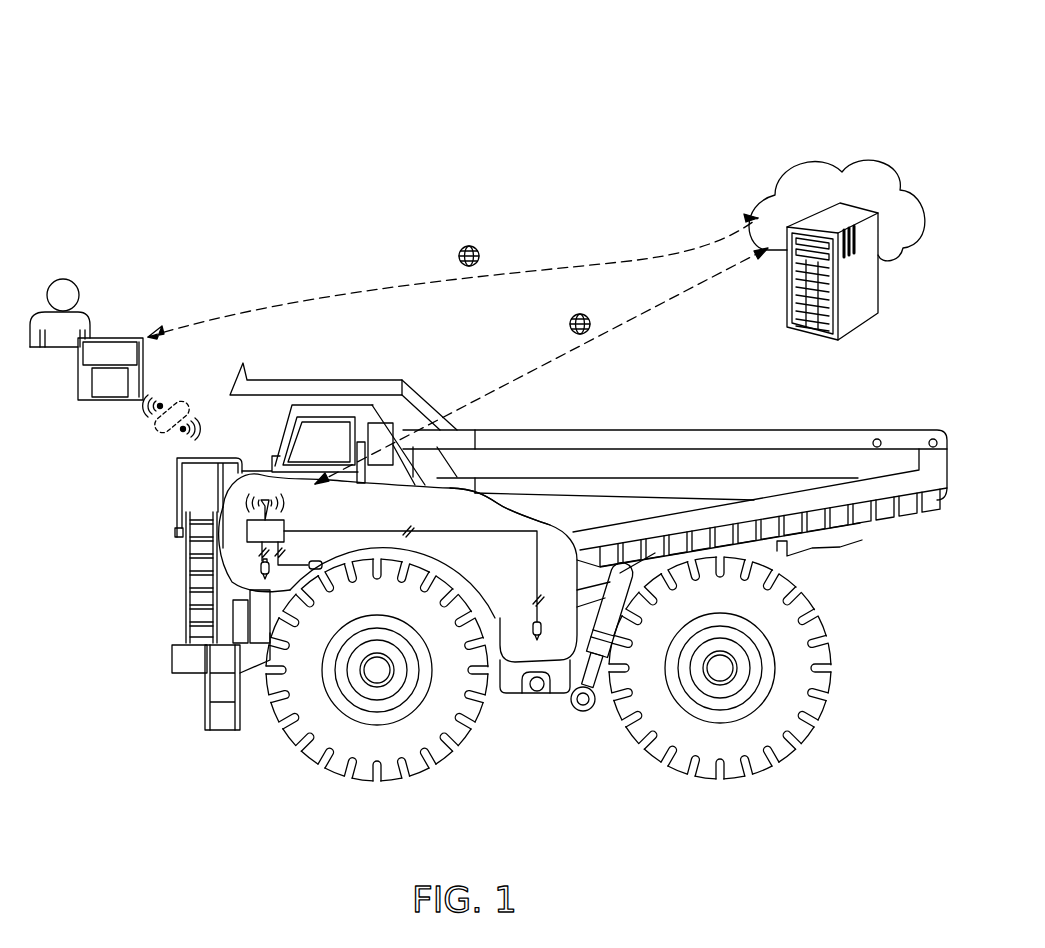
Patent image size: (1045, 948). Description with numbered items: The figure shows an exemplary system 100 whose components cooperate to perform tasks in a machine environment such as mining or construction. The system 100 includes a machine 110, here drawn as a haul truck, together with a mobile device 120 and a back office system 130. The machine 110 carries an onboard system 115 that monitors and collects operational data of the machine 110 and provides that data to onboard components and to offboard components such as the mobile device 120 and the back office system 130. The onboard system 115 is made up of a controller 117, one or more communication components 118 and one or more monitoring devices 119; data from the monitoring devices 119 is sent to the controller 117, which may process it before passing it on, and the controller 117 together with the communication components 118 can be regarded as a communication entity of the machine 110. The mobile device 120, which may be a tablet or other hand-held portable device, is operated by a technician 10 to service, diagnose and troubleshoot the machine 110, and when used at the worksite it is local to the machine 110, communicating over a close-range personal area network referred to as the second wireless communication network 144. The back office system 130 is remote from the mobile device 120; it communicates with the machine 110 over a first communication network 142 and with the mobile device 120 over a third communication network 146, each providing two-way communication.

The system 100 is at (140, 83).
The technician 10 is at (63, 279).
The mobile device 120 is at (125, 339).
The second wireless communication network 144 is at (155, 433).
The back office system 130 is at (818, 156).
The third communication network 146 is at (468, 245).
The first communication network 142 is at (569, 323).
The machine 110 is at (677, 430).
The onboard system 115 is at (516, 512).
The communication components 118 is at (252, 503).
The controller 117 is at (247, 530).
The monitoring devices 119 is at (260, 568).